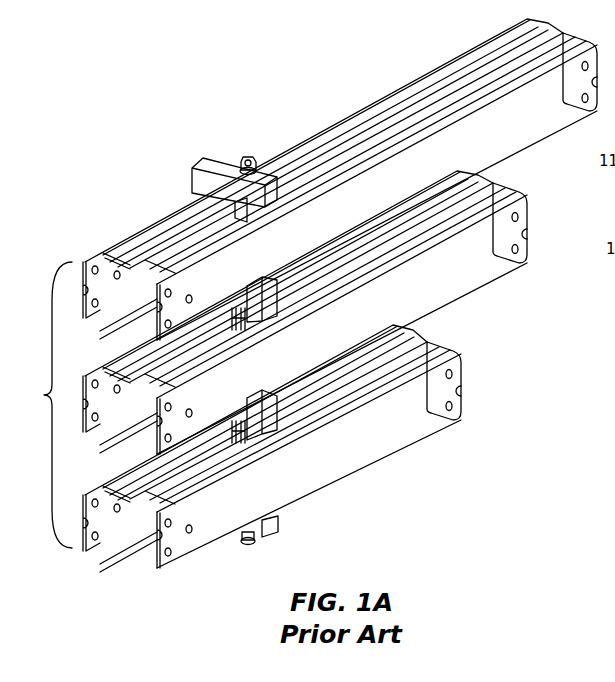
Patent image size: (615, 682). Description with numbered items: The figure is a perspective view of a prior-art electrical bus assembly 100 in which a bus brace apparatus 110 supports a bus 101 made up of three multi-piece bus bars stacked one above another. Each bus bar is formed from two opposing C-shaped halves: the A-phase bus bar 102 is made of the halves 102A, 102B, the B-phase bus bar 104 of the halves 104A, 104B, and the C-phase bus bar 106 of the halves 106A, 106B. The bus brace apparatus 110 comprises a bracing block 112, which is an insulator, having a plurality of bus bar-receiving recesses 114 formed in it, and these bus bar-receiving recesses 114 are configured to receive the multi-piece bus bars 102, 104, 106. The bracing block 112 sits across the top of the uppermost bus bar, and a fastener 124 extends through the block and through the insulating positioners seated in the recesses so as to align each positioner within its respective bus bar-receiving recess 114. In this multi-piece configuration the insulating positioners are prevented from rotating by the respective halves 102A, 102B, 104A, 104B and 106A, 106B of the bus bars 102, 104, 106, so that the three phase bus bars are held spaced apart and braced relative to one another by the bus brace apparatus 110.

The electrical bus assembly 100 is at (302, 79).
The bus 101 is at (38, 405).
The A-phase bus bar 102 is at (157, 220).
The bus bar half 102A is at (453, 57).
The bus bar half 102B is at (433, 100).
The B-phase bus bar 104 is at (473, 288).
The bus bar half 104A is at (482, 182).
The bus bar half 104B is at (533, 210).
The C-phase bus bar 106 is at (344, 476).
The bus bar half 106A is at (415, 337).
The bus bar half 106B is at (460, 398).
The bus brace apparatus 110 is at (197, 152).
The bracing block 112 is at (190, 169).
The bus bar-receiving recesses 114 is at (242, 214).
The fastener 124 is at (249, 157).